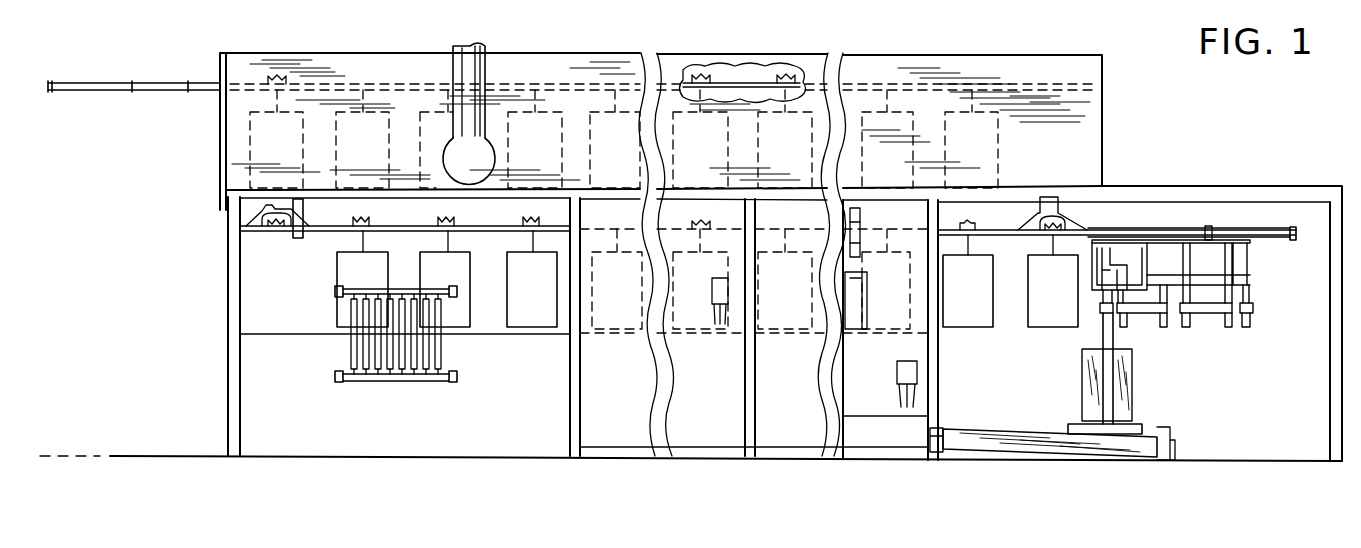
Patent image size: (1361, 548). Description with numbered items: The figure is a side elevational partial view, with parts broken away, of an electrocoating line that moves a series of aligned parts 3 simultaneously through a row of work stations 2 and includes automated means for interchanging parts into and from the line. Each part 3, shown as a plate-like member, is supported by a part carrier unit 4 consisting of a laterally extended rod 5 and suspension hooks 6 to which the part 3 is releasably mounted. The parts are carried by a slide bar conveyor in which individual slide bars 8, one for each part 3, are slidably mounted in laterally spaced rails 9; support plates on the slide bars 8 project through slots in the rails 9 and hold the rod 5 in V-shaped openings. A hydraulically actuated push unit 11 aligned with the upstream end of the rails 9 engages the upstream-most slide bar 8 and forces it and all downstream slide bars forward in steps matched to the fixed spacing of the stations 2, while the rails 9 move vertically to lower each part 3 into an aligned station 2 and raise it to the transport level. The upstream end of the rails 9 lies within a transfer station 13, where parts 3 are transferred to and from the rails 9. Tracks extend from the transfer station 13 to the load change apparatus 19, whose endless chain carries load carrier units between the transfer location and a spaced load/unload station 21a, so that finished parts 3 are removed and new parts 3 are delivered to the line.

The work stations 2 is at (783, 428).
The parts 3 is at (537, 300).
The part carrier unit 4 is at (985, 215).
The rod 5 is at (972, 222).
The suspension hooks 6 is at (967, 239).
The slide bars 8 is at (975, 234).
The rails 9 is at (997, 233).
The push unit 11 is at (1230, 229).
The transfer station 13 is at (303, 292).
The load change apparatus 19 is at (1220, 384).
The load/unload station 21a is at (968, 390).